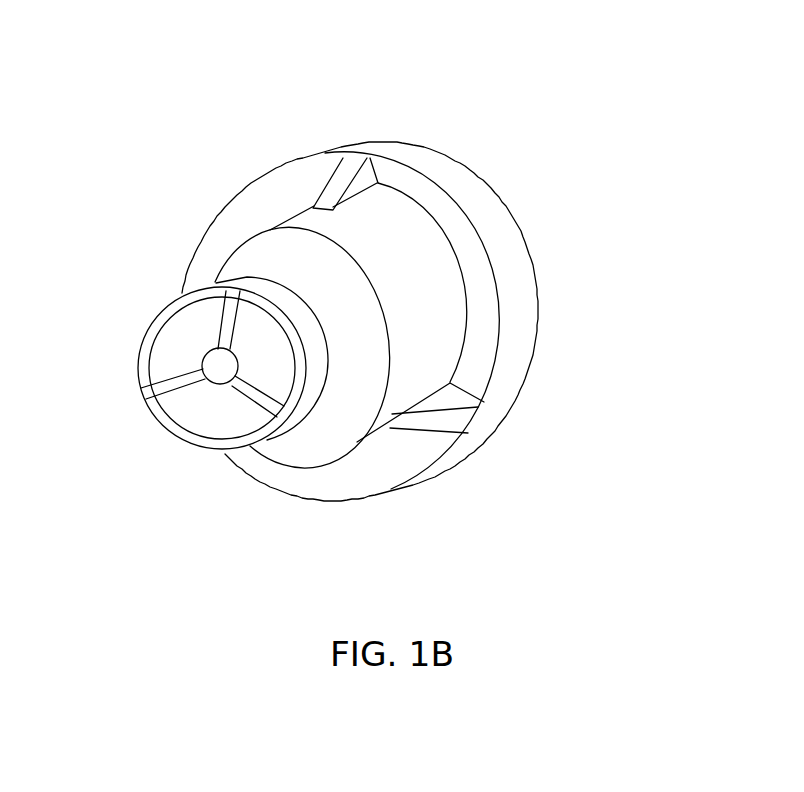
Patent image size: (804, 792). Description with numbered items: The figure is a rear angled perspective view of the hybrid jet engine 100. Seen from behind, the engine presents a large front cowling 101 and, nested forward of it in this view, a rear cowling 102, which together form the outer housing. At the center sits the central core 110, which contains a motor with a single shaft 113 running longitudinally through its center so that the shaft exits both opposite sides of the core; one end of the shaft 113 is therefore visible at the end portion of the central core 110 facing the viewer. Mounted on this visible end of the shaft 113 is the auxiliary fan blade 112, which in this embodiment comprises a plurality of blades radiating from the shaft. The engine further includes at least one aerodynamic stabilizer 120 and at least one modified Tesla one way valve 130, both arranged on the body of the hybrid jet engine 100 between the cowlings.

The hybrid jet engine 100 is at (151, 45).
The front cowling 101 is at (512, 228).
The rear cowling 102 is at (302, 413).
The central core 110 is at (200, 314).
The auxiliary fan blade 112 is at (167, 384).
The shaft 113 is at (218, 360).
The aerodynamic stabilizer 120 is at (457, 404).
The modified Tesla one way valve 130 is at (457, 307).